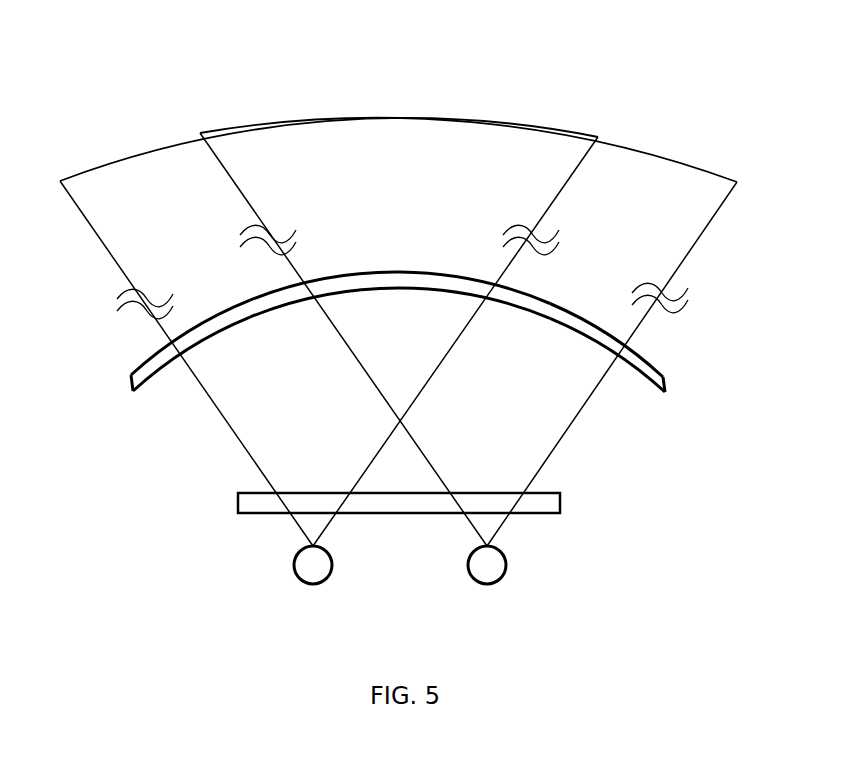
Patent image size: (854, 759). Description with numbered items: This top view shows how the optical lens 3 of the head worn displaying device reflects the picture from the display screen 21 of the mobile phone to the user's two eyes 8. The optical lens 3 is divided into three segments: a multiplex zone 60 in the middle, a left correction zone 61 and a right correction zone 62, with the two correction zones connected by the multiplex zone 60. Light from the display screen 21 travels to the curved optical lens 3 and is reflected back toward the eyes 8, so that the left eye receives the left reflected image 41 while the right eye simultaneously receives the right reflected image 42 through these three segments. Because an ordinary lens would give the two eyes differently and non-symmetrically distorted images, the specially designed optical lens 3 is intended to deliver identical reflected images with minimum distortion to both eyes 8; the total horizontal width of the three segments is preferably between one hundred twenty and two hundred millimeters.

The optical lens 3 is at (414, 266).
The user's eyes 8 is at (470, 575).
The display screen 21 is at (550, 507).
The left reflected image 41 is at (165, 149).
The right reflected image 42 is at (647, 149).
The multiplex zone 60 is at (397, 282).
The left correction zone 61 is at (207, 330).
The right correction zone 62 is at (554, 315).